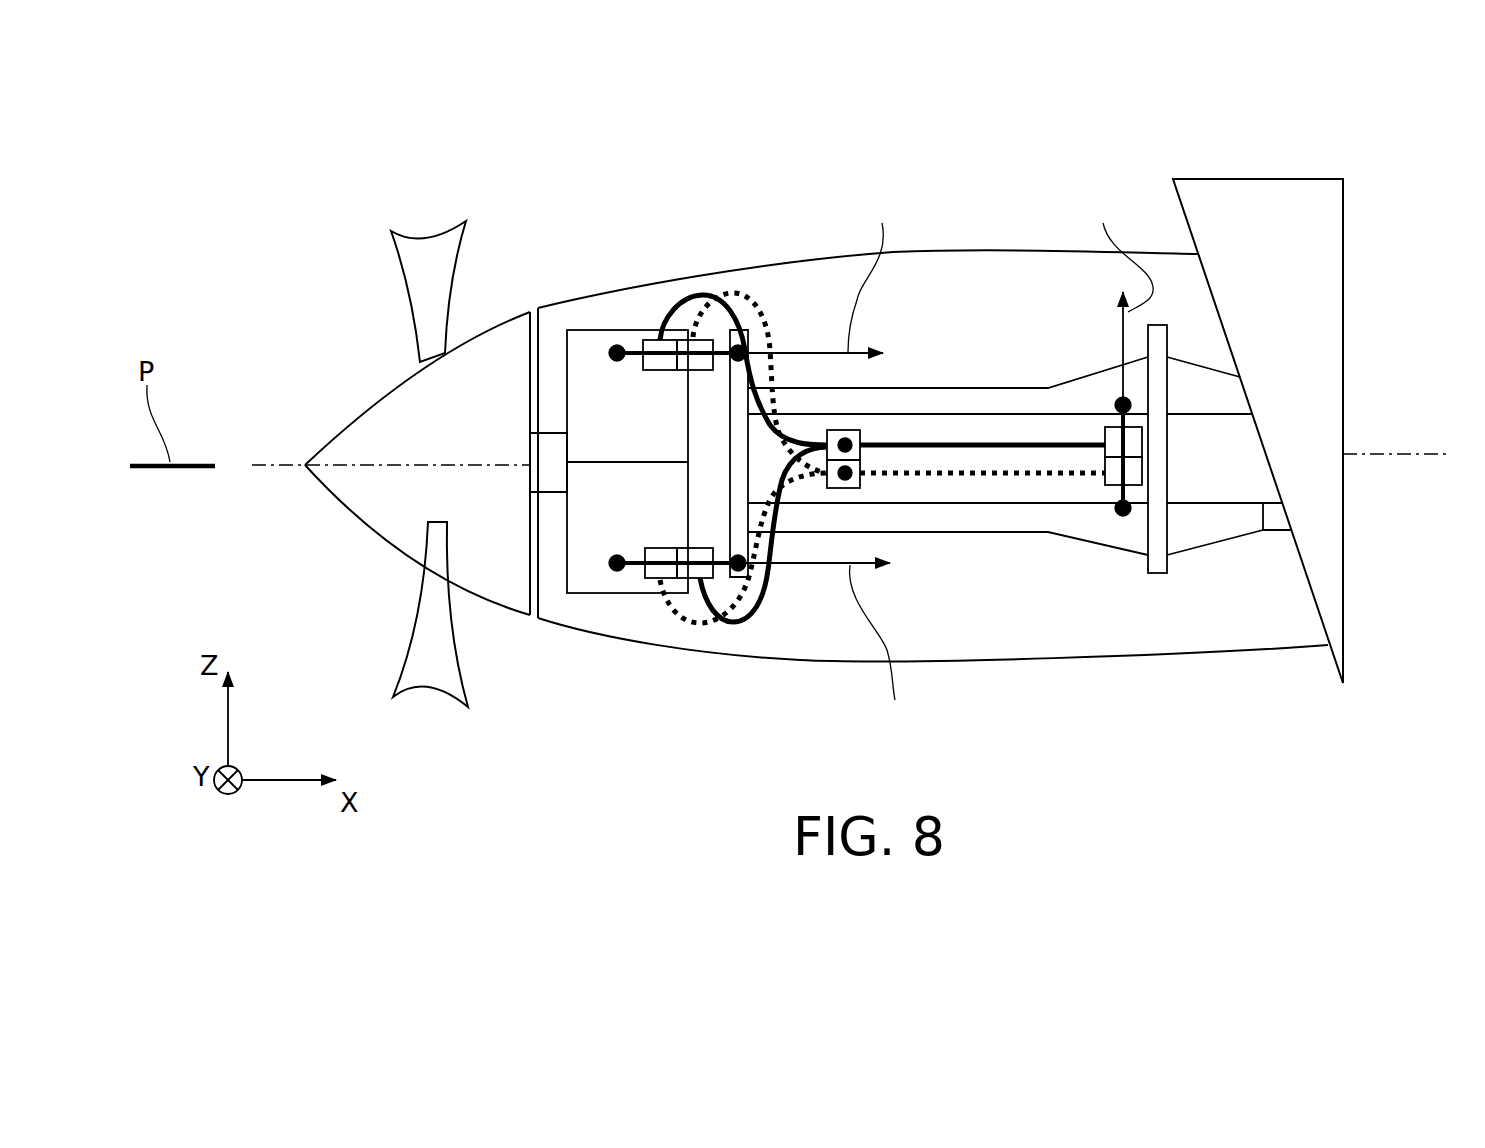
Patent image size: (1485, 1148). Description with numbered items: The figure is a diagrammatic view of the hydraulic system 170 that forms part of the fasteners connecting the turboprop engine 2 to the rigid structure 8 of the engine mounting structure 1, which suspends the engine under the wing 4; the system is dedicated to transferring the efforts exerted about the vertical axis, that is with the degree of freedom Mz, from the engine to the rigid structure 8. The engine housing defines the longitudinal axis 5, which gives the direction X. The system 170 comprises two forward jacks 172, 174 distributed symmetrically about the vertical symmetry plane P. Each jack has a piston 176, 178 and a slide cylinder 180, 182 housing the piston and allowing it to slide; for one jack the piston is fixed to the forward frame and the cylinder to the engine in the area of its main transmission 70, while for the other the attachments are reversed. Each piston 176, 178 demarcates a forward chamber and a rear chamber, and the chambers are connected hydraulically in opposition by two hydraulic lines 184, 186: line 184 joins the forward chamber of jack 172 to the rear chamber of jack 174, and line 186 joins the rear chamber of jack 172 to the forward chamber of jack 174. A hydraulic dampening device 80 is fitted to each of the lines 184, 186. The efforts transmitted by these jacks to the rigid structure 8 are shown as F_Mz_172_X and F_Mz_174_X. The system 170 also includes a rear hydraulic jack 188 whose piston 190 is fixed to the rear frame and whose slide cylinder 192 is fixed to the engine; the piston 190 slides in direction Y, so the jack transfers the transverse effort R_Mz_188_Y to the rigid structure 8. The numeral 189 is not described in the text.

The engine mounting structure 1 is at (1040, 510).
The turboprop engine 2 is at (1058, 372).
The wing 4 is at (1343, 219).
The longitudinal axis 5 is at (258, 462).
The rigid structure 8 is at (1080, 418).
The main transmission 70 is at (577, 417).
The hydraulic dampening device 80 is at (840, 428).
The hydraulic system 170 is at (882, 458).
The forward jack 172 is at (768, 320).
The forward jack 174 is at (783, 593).
The piston 176 is at (730, 380).
The piston 178 is at (643, 556).
The slide cylinder 180 is at (648, 337).
The slide cylinder 182 is at (730, 545).
The hydraulic line 184 is at (1027, 442).
The hydraulic line 186 is at (693, 622).
The rear hydraulic jack 188 is at (1164, 379).
The displaced upper link position 189 is at (755, 312).
The piston 190 is at (1120, 490).
The slide cylinder 192 is at (1142, 440).